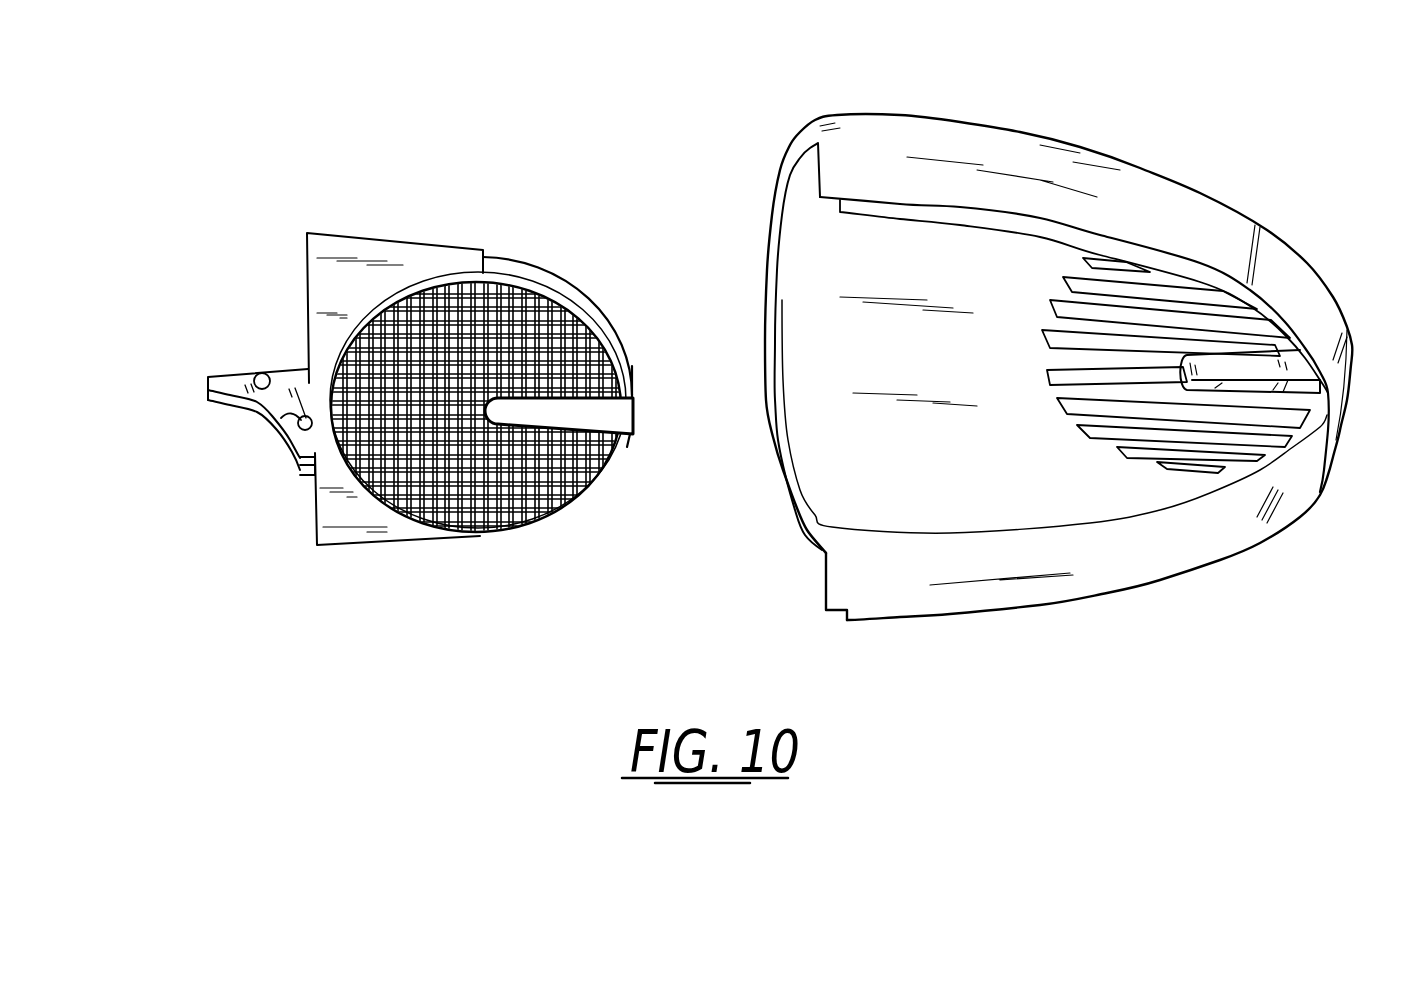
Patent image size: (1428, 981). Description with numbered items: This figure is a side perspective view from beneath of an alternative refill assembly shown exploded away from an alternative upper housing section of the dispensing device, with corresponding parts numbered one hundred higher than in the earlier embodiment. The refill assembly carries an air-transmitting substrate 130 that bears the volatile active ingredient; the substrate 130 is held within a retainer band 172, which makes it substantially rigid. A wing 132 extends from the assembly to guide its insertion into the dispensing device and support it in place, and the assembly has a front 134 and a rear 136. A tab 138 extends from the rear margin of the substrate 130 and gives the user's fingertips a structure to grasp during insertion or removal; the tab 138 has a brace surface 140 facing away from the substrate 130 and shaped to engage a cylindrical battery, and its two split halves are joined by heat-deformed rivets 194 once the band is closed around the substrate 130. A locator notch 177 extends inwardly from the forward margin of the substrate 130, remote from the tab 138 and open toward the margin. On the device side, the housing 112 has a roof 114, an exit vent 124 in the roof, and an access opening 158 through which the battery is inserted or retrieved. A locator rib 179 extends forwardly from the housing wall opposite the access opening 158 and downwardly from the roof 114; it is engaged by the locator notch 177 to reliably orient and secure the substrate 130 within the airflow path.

The housing 112 is at (983, 168).
The roof 114 is at (1013, 438).
The exit vent 124 is at (1236, 453).
The access opening 158 is at (825, 580).
The locator rib 179 is at (1257, 390).
The substrate 130 is at (573, 483).
The wing 132 is at (367, 233).
The front 134 is at (632, 366).
The retainer band 172 is at (543, 272).
The locator notch 177 is at (597, 413).
The rear 136 is at (208, 378).
The tab 138 is at (232, 372).
The brace surface 140 is at (235, 404).
The heat-deformed rivets 194 is at (270, 421).